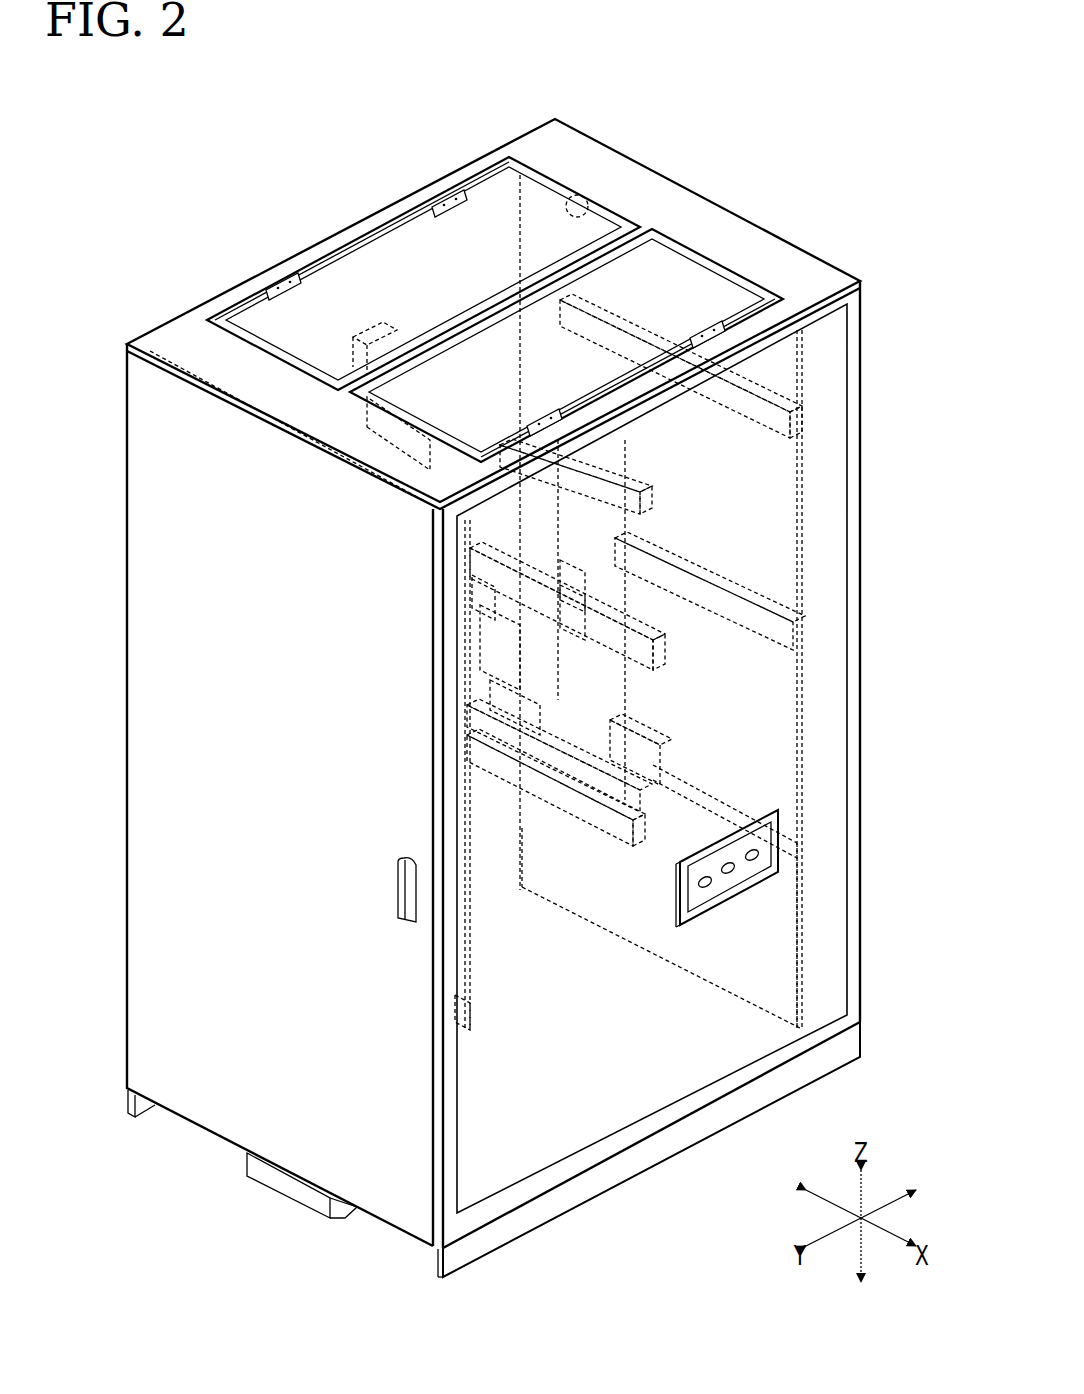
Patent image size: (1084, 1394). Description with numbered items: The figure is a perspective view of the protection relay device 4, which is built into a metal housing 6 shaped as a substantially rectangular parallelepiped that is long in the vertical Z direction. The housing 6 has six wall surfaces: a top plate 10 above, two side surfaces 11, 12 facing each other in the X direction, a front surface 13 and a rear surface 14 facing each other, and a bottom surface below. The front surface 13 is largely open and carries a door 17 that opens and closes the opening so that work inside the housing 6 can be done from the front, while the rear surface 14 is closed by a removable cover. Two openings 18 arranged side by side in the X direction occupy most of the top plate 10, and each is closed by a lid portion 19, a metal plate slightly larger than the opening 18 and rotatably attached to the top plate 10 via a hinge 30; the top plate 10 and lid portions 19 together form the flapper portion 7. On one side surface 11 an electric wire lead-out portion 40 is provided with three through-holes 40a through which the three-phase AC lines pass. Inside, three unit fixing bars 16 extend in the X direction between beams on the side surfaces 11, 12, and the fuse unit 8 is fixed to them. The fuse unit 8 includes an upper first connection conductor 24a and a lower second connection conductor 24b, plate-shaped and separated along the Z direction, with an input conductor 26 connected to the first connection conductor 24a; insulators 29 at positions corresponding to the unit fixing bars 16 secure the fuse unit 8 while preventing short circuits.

The protection relay device 4 is at (777, 175).
The housing 6 is at (585, 1222).
The flapper portion 7 is at (465, 100).
The fuse unit 8 is at (645, 455).
The top plate 10 is at (535, 145).
The side surface 11 is at (835, 555).
The side surface 12 is at (292, 303).
The front surface 13 is at (440, 1170).
The rear surface 14 is at (862, 772).
The unit fixing bar 16 is at (400, 470).
The door 17 is at (140, 982).
The opening 18 is at (600, 205).
The lid portion 19 is at (470, 230).
The first connection conductor 24a is at (600, 570).
The second connection conductor 24b is at (640, 738).
The input conductor 26 is at (470, 600).
The insulator 29 is at (640, 622).
The hinge 30 is at (290, 281).
The electric wire lead-out portion 40 is at (812, 883).
The through-hole 40a is at (712, 882).